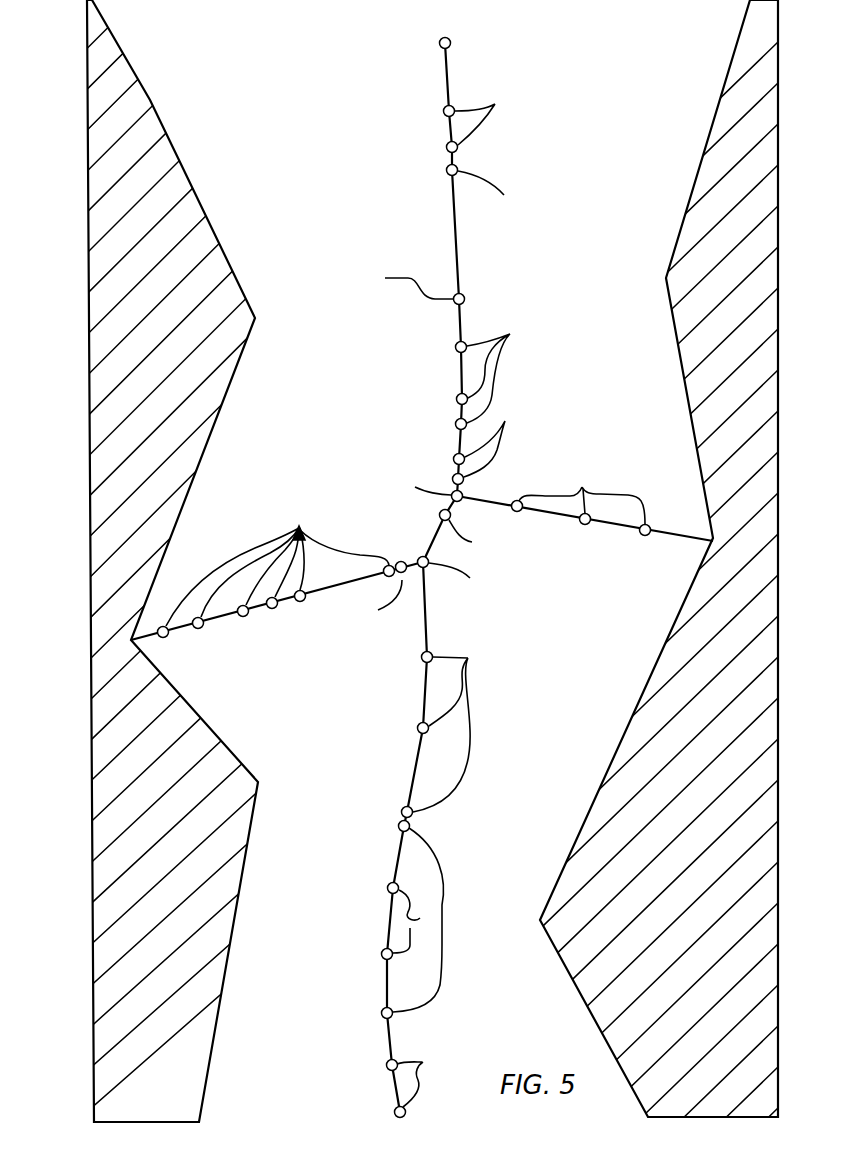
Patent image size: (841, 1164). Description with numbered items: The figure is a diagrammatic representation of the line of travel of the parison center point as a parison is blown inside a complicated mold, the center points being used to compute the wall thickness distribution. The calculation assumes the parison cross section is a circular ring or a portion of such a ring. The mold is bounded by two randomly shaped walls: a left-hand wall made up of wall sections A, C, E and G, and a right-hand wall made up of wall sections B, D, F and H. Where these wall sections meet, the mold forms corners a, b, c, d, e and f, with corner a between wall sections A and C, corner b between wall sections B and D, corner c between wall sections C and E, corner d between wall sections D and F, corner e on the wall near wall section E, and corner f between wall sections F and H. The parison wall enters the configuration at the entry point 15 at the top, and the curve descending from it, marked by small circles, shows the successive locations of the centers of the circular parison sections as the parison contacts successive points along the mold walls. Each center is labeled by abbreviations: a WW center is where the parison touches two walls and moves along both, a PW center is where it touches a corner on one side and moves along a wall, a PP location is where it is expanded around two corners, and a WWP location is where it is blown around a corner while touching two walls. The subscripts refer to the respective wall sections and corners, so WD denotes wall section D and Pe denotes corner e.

The parison wall entry point 15 is at (451, 43).
The wall section A is at (145, 132).
The wall section B is at (706, 180).
The wall section C is at (178, 472).
The wall section D is at (693, 397).
The wall section E is at (236, 785).
The wall section F is at (627, 750).
The wall section G is at (213, 934).
The wall section H is at (606, 1019).
The corner a is at (237, 328).
The corner b is at (674, 284).
The corner c is at (119, 652).
The corner d is at (722, 539).
The corner e is at (159, 697).
The corner f is at (550, 918).